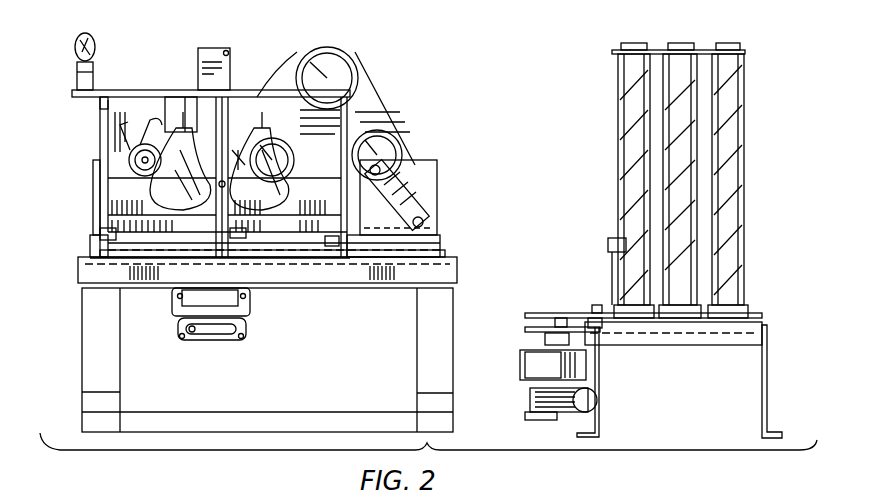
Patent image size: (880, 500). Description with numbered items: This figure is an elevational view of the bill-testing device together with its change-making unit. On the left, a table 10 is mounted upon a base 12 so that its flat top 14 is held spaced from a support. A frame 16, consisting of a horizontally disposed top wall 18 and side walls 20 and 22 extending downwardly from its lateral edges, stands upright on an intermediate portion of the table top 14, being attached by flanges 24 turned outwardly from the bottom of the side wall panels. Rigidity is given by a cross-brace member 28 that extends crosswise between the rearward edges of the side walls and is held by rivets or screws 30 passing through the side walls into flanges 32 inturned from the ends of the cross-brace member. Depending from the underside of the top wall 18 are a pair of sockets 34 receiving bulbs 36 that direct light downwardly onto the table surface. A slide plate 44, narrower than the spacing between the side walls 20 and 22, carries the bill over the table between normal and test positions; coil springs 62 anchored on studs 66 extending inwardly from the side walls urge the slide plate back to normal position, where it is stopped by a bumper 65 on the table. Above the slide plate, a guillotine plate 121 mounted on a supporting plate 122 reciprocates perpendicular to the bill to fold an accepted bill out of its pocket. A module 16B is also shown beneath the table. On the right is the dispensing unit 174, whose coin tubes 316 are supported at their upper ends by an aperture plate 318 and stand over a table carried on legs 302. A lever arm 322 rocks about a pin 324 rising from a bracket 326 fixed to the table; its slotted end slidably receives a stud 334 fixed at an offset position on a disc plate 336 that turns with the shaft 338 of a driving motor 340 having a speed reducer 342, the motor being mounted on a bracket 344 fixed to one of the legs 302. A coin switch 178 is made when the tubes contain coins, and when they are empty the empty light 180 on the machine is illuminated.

The table 10 is at (455, 268).
The base 12 is at (423, 352).
The flat top 14 is at (427, 258).
The frame 16 is at (273, 91).
The control module 16B is at (165, 323).
The top wall 18 is at (246, 93).
The side wall 20 is at (100, 128).
The side wall 22 is at (348, 110).
The flanges 24 is at (90, 252).
The cross-brace member 28 is at (310, 232).
The rivets or screws 30 is at (95, 208).
The flanges 32 is at (95, 185).
The sockets 34 is at (175, 105).
The bulbs 36 is at (300, 165).
The slide plate 44 is at (262, 258).
The coil springs 62 is at (222, 240).
The bumper 65 is at (100, 258).
The stud 66 is at (100, 232).
The guillotine plate 121 is at (171, 147).
The supporting plate 122 is at (240, 154).
The dispensing unit 174 is at (759, 239).
The coin switch 178 is at (608, 245).
The empty light 180 is at (92, 32).
The legs 302 is at (767, 365).
The coin tubes 316 is at (745, 108).
The aperture plate 318 is at (660, 50).
The lever arm 322 is at (540, 313).
The pin 324 is at (598, 313).
The bracket 326 is at (600, 330).
The stud 334 is at (560, 313).
The disc plate 336 is at (525, 328).
The shaft 338 is at (545, 338).
The driving motor 340 is at (530, 400).
The speed reducer 342 is at (530, 365).
The bracket 344 is at (599, 360).